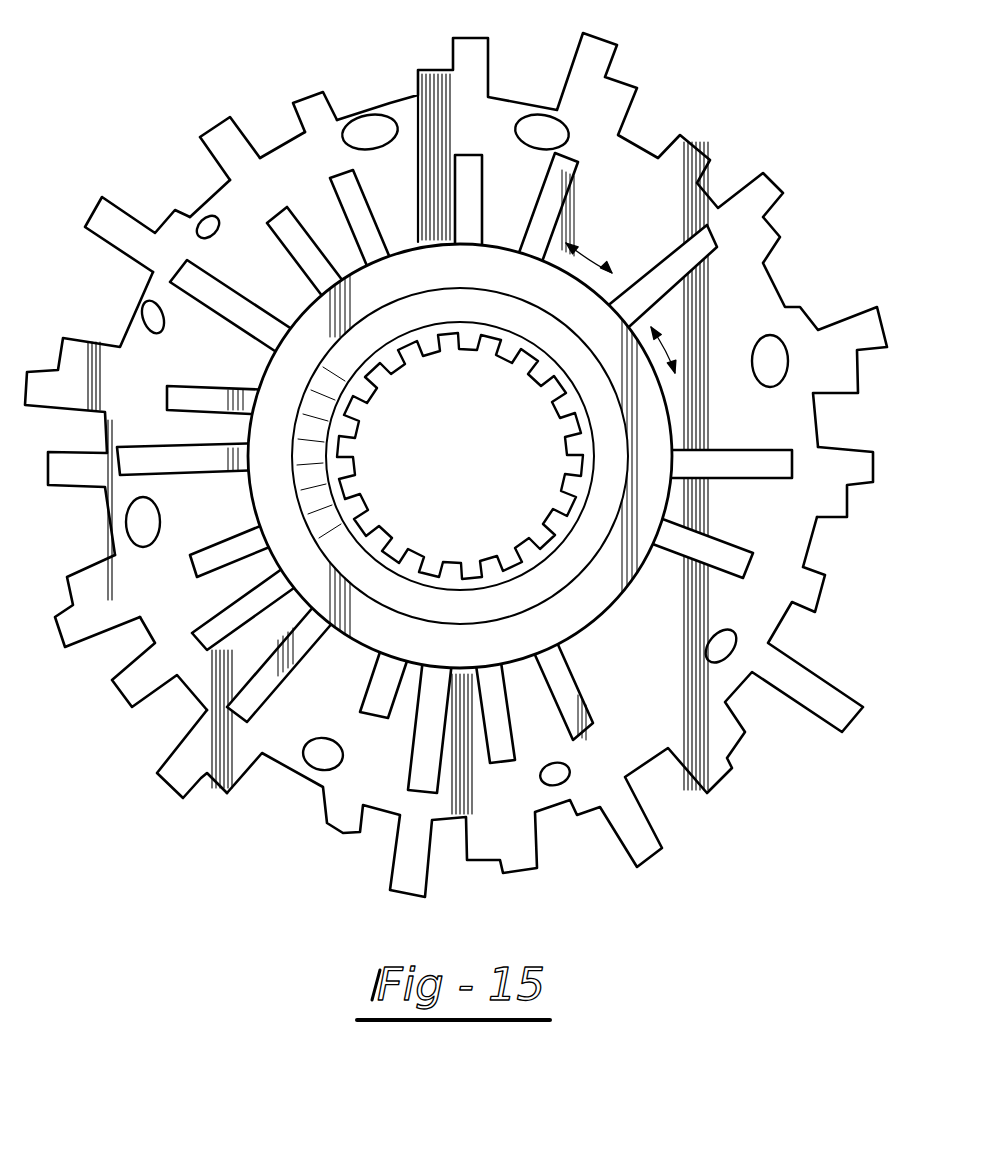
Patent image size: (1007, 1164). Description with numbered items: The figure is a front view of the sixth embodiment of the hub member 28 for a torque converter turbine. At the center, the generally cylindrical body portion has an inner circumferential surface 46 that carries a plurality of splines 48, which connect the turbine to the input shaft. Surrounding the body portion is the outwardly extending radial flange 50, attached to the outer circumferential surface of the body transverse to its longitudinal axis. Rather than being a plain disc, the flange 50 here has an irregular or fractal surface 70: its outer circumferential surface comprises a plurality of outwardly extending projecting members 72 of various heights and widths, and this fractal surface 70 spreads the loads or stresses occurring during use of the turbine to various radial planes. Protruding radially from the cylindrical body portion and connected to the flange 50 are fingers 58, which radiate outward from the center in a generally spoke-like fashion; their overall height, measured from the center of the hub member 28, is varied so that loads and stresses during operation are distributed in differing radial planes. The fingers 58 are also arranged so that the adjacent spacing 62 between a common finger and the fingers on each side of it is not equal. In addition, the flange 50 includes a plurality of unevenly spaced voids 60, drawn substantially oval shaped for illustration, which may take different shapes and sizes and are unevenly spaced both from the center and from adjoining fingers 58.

The hub member 28 is at (456, 454).
The inner circumferential surface 46 is at (374, 363).
The splines 48 is at (472, 336).
The radial flange 50 is at (342, 106).
The fingers 58 is at (712, 246).
The voids 60 is at (318, 757).
The adjacent spacing 62 is at (598, 262).
The fractal surface 70 is at (208, 115).
The projecting members 72 is at (121, 220).